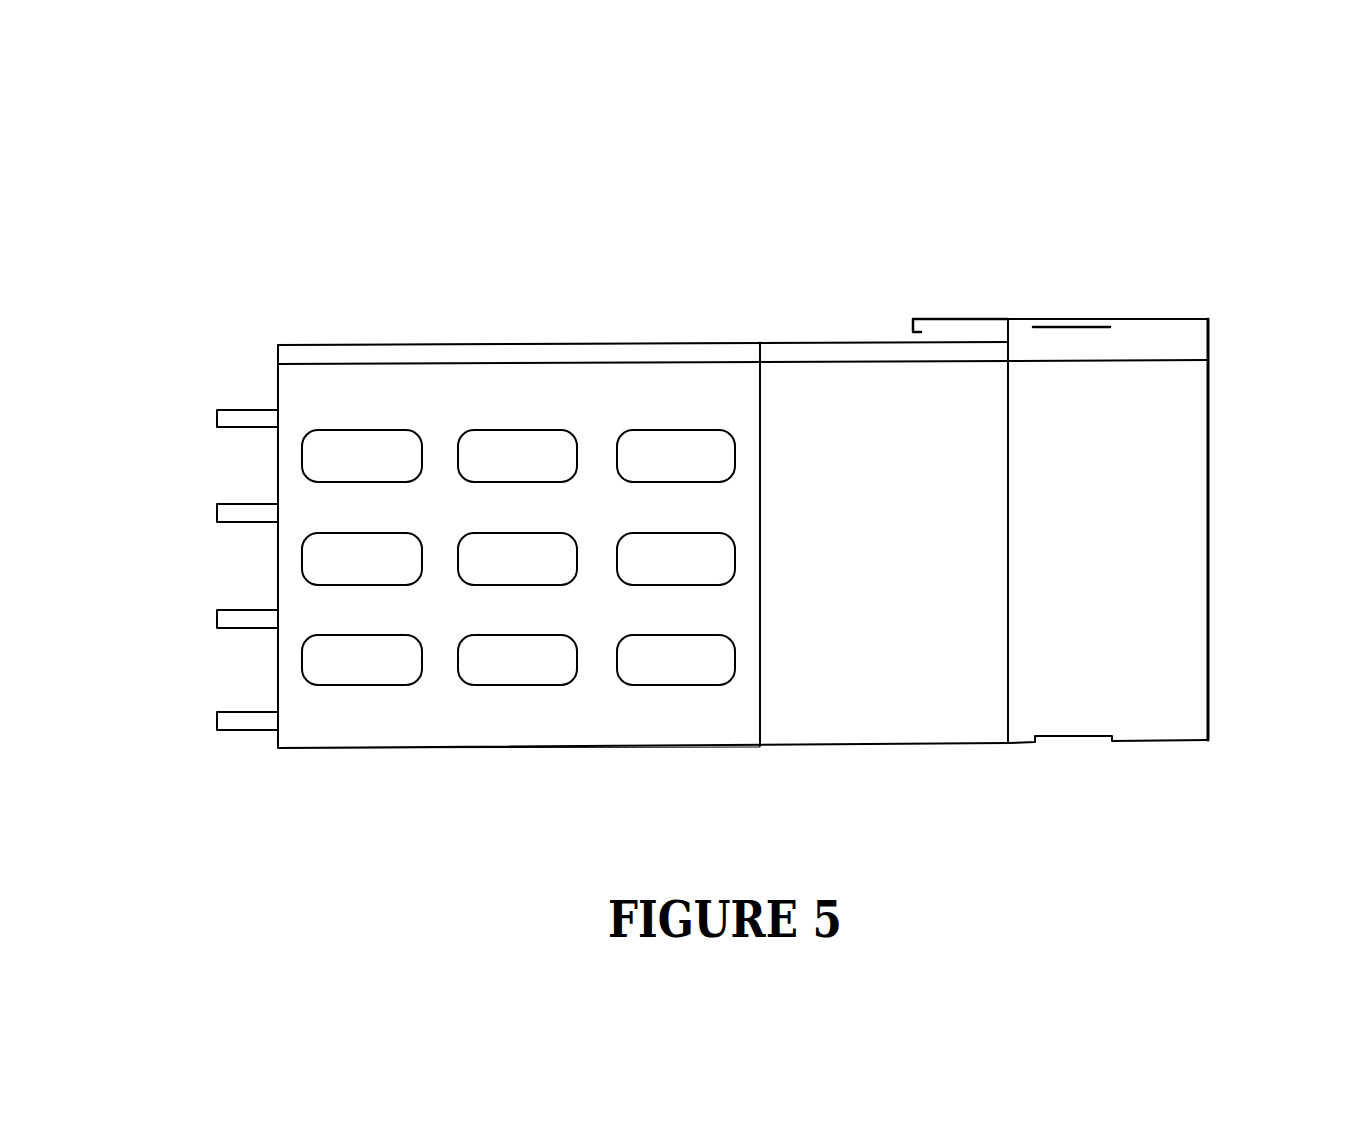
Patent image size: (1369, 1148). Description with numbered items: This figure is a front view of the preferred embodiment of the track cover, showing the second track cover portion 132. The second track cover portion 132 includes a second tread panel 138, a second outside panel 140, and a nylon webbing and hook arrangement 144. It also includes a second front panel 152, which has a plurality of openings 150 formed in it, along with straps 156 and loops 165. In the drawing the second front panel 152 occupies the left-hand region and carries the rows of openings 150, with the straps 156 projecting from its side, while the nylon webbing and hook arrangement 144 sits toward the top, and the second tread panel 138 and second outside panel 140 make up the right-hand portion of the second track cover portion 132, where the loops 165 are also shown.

The second track cover portion 132 is at (730, 230).
The openings 150 is at (348, 450).
The second front panel 152 is at (597, 387).
The straps 156 is at (240, 428).
The nylon webbing and hook arrangement 144 is at (947, 317).
The second tread panel 138 is at (1182, 340).
The second outside panel 140 is at (1210, 453).
The loops 165 is at (1067, 327).